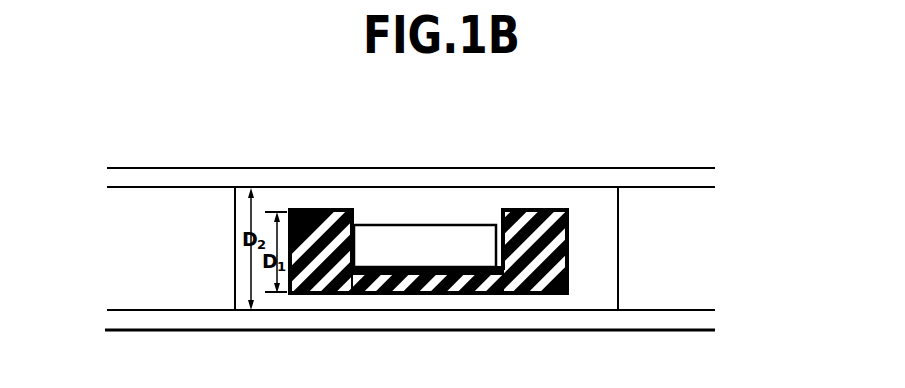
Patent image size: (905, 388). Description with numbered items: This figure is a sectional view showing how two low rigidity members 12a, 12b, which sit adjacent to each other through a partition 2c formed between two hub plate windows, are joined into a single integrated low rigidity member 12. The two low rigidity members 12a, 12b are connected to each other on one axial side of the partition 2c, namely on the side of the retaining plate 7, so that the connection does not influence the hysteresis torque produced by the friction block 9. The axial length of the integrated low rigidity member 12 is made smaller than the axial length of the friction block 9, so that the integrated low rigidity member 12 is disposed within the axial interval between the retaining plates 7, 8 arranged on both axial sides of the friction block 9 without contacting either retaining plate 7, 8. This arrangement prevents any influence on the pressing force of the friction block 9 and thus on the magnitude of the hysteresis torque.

The partition 2c is at (405, 252).
The retaining plate 7 is at (615, 318).
The retaining plate 8 is at (628, 181).
The friction block 9 is at (185, 252).
The integrated low rigidity member 12 is at (530, 211).
The low rigidity member 12a is at (543, 273).
The low rigidity member 12b is at (317, 272).